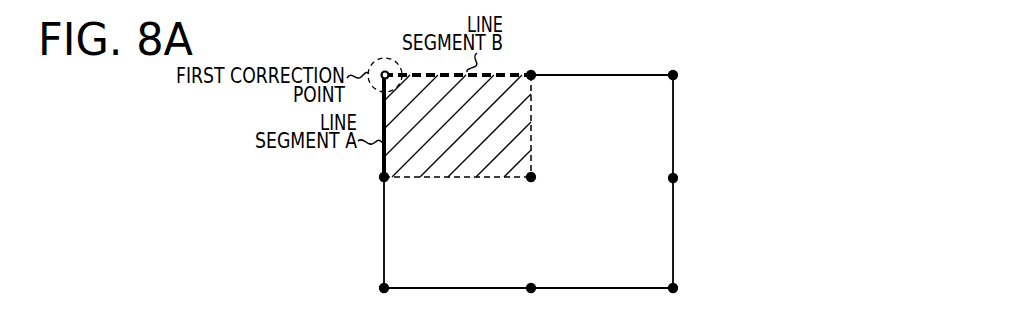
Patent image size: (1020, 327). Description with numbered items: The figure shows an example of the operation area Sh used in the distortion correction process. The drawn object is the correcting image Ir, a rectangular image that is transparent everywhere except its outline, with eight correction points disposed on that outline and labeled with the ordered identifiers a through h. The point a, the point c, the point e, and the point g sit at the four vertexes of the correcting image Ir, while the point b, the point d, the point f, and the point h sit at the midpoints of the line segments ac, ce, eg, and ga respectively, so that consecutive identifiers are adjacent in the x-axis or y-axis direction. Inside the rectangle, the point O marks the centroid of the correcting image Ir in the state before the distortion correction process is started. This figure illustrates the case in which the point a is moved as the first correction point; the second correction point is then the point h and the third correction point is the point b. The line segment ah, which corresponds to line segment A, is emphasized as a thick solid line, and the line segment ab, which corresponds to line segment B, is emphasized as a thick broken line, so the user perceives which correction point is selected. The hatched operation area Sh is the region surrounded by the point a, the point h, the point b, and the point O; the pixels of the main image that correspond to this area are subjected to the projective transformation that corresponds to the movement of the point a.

The correcting image Ir is at (658, 145).
The operation area Sh is at (457, 126).
The point a is at (384, 55).
The point b is at (531, 62).
The point c is at (680, 63).
The point d is at (684, 178).
The point e is at (672, 304).
The point f is at (531, 304).
The point g is at (383, 304).
The point h is at (372, 176).
The point O is at (533, 192).